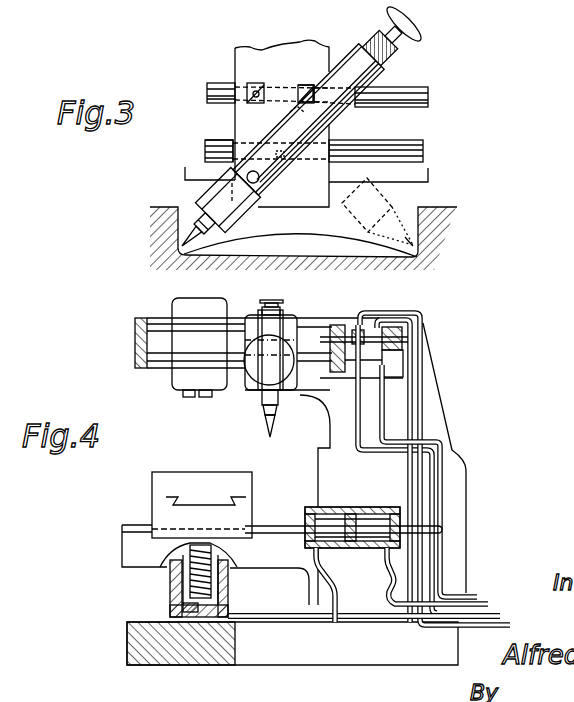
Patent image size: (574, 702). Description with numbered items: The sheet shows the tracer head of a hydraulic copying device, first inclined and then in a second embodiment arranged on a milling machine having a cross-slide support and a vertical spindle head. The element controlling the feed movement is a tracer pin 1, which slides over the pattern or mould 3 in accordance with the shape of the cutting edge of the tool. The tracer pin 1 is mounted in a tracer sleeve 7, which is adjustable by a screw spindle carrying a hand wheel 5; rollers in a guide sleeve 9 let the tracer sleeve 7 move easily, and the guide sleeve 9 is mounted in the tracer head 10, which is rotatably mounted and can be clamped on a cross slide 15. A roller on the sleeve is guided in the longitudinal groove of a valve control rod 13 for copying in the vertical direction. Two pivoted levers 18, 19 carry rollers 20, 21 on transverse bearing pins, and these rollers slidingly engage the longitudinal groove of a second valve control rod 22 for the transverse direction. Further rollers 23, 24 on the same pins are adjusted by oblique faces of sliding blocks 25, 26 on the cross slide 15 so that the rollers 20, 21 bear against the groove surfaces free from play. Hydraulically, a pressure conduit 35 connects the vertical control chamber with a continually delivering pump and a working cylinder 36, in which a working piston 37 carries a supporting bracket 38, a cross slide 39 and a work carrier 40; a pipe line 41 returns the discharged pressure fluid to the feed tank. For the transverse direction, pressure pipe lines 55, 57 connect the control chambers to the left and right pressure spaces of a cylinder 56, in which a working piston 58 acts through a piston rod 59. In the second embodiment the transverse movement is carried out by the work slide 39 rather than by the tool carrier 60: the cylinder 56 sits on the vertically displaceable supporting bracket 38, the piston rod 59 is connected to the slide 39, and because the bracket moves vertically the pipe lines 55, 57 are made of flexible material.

In FIG. 3, the tracer pin 1 is at (186, 249).
In FIG. 4, the tracer pin 1 is at (271, 435).
In FIG. 3, the pattern or mould 3 is at (262, 254).
In FIG. 3, the hand wheel 5 is at (421, 37).
In FIG. 4, the hand wheel 5 is at (283, 301).
In FIG. 3, the tracer sleeve 7 is at (219, 223).
In FIG. 4, the tracer sleeve 7 is at (274, 412).
In FIG. 3, the guide sleeve 9 is at (241, 215).
In FIG. 4, the guide sleeve 9 is at (278, 397).
In FIG. 3, the tracer head 10 is at (336, 118).
In FIG. 4, the tracer head 10 is at (263, 378).
In FIG. 3, the valve control rod 13 is at (388, 146).
In FIG. 3, the cross slide 15 is at (316, 208).
In FIG. 4, the cross slide 15 is at (292, 323).
In FIG. 3, the lever 18 is at (273, 82).
In FIG. 3, the lever 19 is at (298, 108).
In FIG. 3, the roller 20 is at (257, 138).
In FIG. 3, the roller 21 is at (305, 85).
In FIG. 3, the valve control rod 22 is at (414, 106).
In FIG. 3, the roller 23 is at (219, 138).
In FIG. 3, the roller 24 is at (315, 81).
In FIG. 3, the sliding block 25 is at (225, 83).
In FIG. 3, the sliding block 26 is at (312, 101).
In FIG. 4, the pressure conduit 35 is at (358, 448).
In FIG. 4, the working cylinder 36 is at (172, 610).
In FIG. 4, the working piston 37 is at (186, 583).
In FIG. 4, the supporting bracket 38 is at (274, 566).
In FIG. 4, the cross slide 39 is at (153, 508).
In FIG. 4, the work carrier 40 is at (214, 476).
In FIG. 4, the pipe line 41 is at (388, 442).
In FIG. 4, the pressure pipe line 55 is at (325, 566).
In FIG. 4, the cylinder 56 is at (330, 508).
In FIG. 4, the pressure pipe line 57 is at (387, 585).
In FIG. 4, the working piston 58 is at (356, 512).
In FIG. 4, the piston rod 59 is at (265, 527).
In FIG. 4, the tool carrier 60 is at (172, 380).